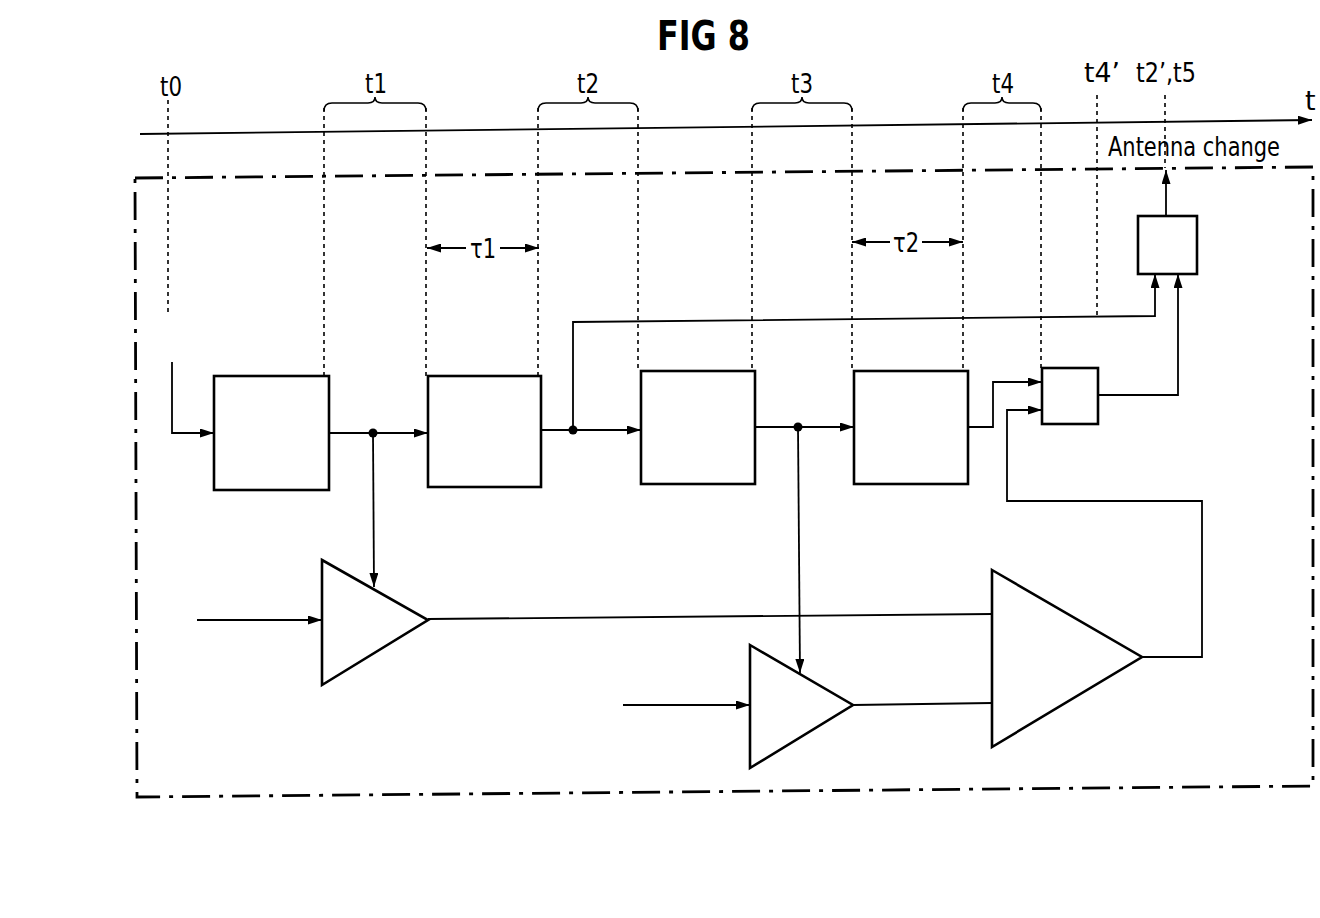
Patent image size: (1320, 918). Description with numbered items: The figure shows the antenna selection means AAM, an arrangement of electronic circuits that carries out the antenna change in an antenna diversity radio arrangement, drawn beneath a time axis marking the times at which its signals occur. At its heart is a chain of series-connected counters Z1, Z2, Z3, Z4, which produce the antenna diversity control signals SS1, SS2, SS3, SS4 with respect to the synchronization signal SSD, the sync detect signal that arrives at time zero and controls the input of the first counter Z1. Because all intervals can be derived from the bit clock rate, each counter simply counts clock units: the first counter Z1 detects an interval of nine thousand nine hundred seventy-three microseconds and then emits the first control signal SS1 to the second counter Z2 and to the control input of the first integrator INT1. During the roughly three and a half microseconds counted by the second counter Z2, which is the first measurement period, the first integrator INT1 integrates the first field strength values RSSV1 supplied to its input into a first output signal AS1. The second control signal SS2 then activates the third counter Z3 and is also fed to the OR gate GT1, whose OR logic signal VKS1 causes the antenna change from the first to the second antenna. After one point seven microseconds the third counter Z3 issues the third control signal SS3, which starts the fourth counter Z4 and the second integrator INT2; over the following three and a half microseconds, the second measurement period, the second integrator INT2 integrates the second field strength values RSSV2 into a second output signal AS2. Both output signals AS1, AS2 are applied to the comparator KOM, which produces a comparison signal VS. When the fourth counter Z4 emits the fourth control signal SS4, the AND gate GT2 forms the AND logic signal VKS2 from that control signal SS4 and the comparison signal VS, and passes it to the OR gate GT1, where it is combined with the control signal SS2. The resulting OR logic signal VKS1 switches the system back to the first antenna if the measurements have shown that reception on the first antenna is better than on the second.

The antenna selection means AAM is at (1128, 787).
The first counter Z1 is at (272, 490).
The second counter Z2 is at (487, 487).
The third counter Z3 is at (700, 484).
The fourth counter Z4 is at (912, 484).
The synchronization signal SSD is at (182, 380).
The first antenna diversity control signal SS1 is at (361, 428).
The second antenna diversity control signal SS2 is at (597, 321).
The third antenna diversity control signal SS3 is at (812, 425).
The fourth antenna diversity control signal SS4 is at (975, 422).
The OR gate GT1 is at (1197, 245).
The AND gate GT2 is at (1098, 415).
The OR logic signal VKS1 is at (1199, 193).
The AND logic signal VKS2 is at (1171, 334).
The comparison signal VS is at (1104, 533).
The first integrator INT1 is at (372, 652).
The second integrator INT2 is at (800, 738).
The first field strength values RSSV1 is at (259, 604).
The second field strength values RSSV2 is at (686, 689).
The first output signal AS1 is at (710, 603).
The second output signal AS2 is at (922, 688).
The comparator KOM is at (1067, 658).